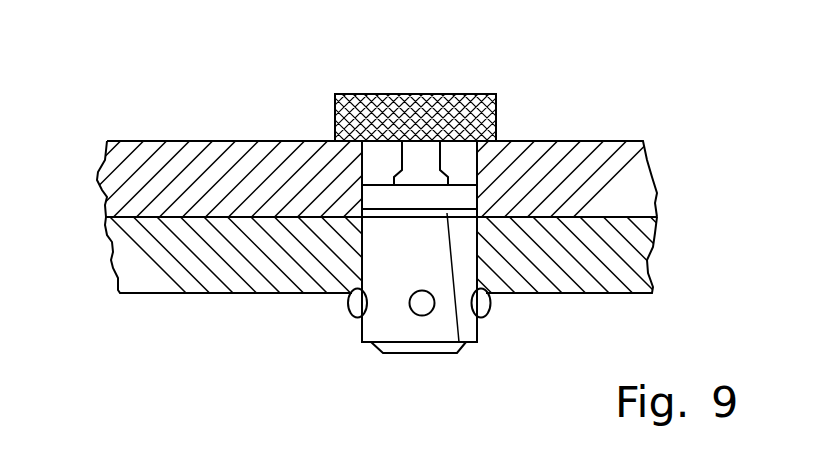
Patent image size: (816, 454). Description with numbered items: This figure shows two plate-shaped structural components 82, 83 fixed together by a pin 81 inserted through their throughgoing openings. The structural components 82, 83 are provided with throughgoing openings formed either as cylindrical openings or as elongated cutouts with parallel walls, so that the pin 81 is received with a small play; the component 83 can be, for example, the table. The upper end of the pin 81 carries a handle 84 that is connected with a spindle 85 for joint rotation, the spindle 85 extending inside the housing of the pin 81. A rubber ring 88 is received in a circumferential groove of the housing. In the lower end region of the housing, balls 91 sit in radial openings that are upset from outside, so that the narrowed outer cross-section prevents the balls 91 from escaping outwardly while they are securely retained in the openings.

The pin 81 is at (377, 357).
The structural component 82 is at (605, 170).
The structural component 83 is at (630, 265).
The handle 84 is at (425, 105).
The spindle 85 is at (430, 155).
The rubber ring 88 is at (459, 342).
The balls 91 is at (354, 306).